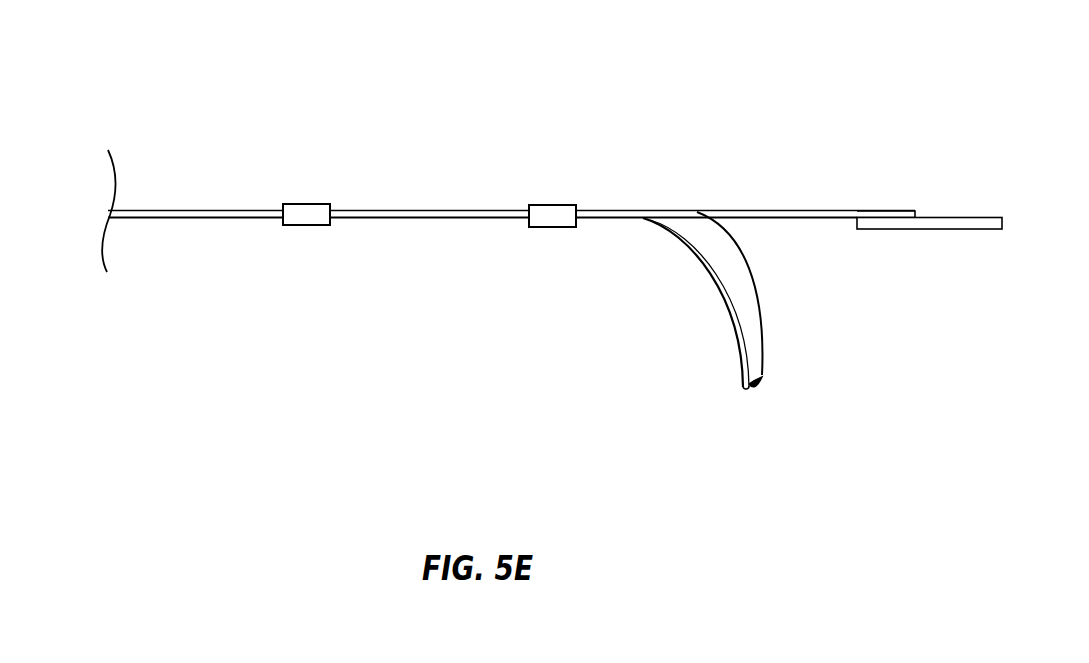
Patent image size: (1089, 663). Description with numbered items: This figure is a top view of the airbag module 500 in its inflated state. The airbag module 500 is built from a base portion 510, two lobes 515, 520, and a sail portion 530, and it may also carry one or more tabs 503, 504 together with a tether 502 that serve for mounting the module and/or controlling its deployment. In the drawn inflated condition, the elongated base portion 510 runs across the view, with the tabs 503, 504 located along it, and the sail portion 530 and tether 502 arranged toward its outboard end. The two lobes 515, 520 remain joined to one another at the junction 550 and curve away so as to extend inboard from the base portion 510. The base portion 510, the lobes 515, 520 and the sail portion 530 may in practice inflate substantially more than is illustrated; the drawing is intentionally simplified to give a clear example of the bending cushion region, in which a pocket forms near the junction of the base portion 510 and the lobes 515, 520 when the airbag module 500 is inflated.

The airbag module 500 is at (683, 123).
The tether 502 is at (970, 230).
The tab 503 is at (307, 210).
The tab 504 is at (560, 212).
The base portion 510 is at (378, 216).
The lobe 515 is at (742, 358).
The lobe 520 is at (753, 315).
The sail portion 530 is at (787, 215).
The joined region of the lobes 550 is at (762, 380).